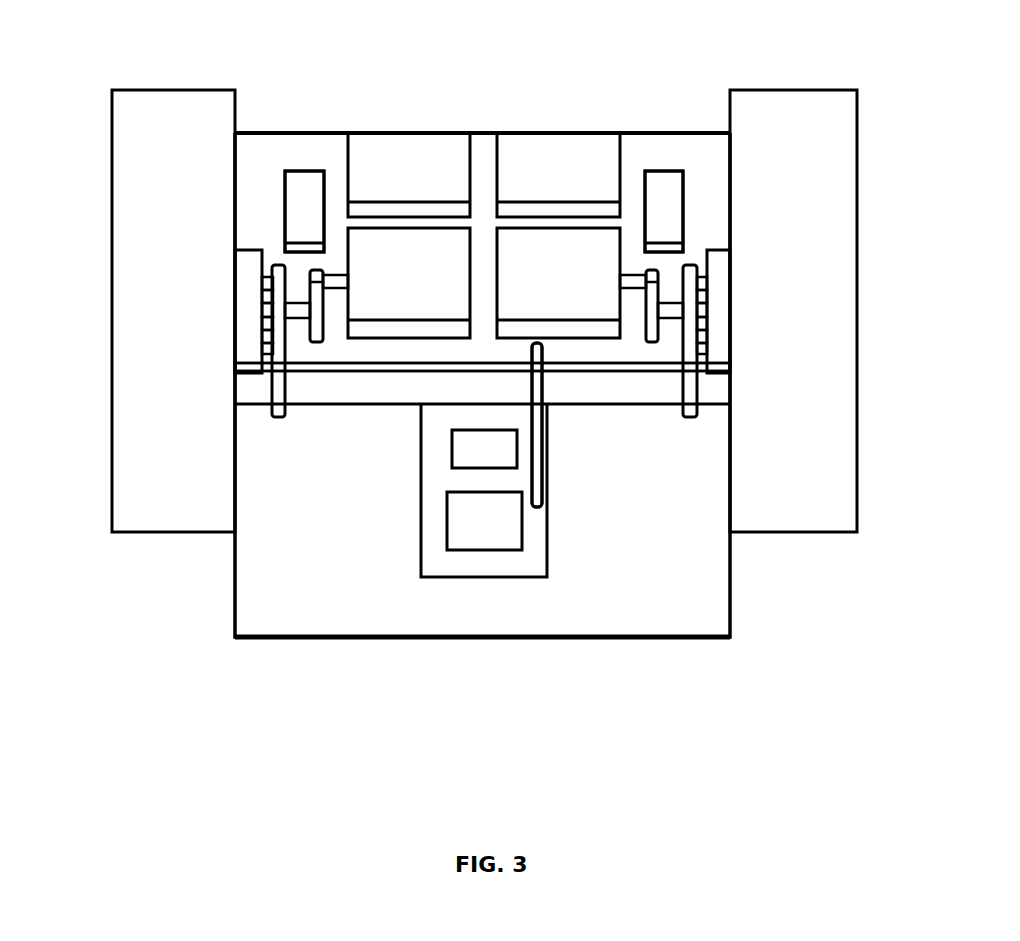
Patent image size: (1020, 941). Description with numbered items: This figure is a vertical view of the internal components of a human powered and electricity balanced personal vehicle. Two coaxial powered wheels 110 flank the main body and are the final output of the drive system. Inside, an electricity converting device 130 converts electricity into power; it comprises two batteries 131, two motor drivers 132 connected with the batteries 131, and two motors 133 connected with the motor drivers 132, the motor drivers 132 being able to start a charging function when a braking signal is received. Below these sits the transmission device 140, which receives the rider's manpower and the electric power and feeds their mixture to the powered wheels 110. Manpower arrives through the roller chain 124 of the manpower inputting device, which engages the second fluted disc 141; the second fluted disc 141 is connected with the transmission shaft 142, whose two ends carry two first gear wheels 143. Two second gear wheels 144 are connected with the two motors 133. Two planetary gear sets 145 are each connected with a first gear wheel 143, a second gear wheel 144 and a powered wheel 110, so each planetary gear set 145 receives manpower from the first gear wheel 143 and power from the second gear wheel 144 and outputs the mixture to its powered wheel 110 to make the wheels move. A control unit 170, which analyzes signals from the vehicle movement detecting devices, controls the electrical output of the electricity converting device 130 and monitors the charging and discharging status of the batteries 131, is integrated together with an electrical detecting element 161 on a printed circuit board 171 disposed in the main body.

The powered wheels 110 is at (143, 532).
The roller chain 124 is at (542, 463).
The electricity converting device 130 is at (688, 70).
The battery 131 is at (418, 162).
The motor driver 132 is at (311, 171).
The motor 133 is at (369, 262).
The transmission device 140 is at (780, 723).
The second fluted disc 141 is at (583, 404).
The transmission shaft 142 is at (622, 404).
The first gear wheel 143 is at (276, 417).
The second gear wheel 144 is at (310, 270).
The planetary gear set 145 is at (250, 373).
The electrical detecting element 161 is at (452, 448).
The control unit 170 is at (487, 550).
The printed circuit board 171 is at (432, 577).